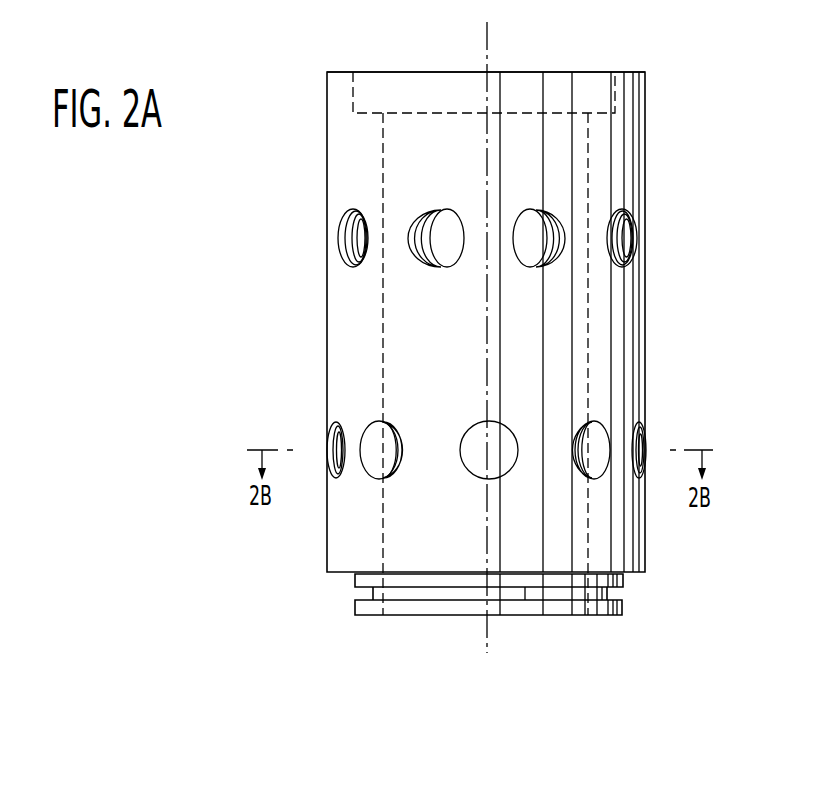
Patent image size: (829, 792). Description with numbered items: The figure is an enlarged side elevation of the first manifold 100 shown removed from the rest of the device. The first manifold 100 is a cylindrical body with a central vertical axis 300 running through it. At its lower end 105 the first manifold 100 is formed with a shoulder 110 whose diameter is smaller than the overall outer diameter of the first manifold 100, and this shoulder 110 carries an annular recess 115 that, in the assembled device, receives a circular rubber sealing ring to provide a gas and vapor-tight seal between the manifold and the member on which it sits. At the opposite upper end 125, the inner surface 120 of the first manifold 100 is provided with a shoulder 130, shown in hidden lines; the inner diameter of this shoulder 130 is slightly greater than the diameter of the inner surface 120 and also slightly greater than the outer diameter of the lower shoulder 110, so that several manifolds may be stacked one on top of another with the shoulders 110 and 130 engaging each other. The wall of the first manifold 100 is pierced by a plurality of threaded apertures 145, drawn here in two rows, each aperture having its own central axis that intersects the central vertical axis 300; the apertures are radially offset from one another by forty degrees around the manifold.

The first manifold 100 is at (667, 334).
The lower end 105 is at (383, 616).
The shoulder 110 is at (623, 579).
The annular recess 115 is at (620, 593).
The inner surface 120 is at (383, 133).
The upper end 125 is at (337, 72).
The shoulder 130 is at (355, 77).
The threaded apertures 145 is at (340, 240).
The central vertical axis 300 is at (489, 636).